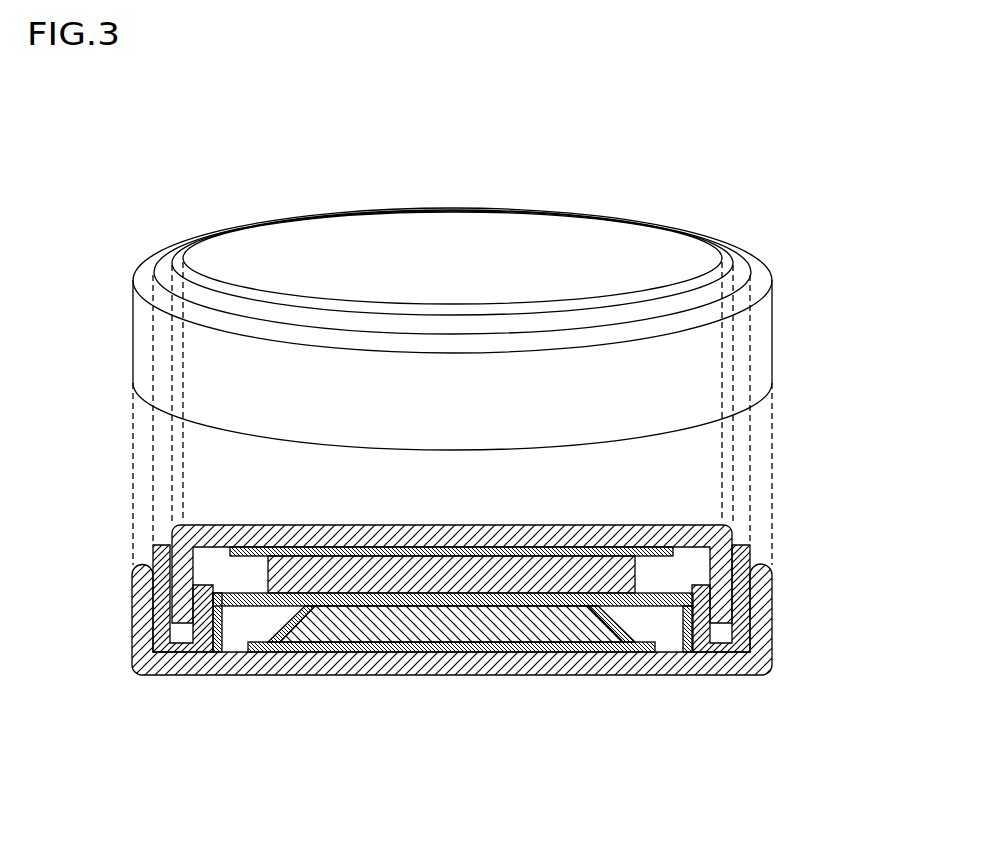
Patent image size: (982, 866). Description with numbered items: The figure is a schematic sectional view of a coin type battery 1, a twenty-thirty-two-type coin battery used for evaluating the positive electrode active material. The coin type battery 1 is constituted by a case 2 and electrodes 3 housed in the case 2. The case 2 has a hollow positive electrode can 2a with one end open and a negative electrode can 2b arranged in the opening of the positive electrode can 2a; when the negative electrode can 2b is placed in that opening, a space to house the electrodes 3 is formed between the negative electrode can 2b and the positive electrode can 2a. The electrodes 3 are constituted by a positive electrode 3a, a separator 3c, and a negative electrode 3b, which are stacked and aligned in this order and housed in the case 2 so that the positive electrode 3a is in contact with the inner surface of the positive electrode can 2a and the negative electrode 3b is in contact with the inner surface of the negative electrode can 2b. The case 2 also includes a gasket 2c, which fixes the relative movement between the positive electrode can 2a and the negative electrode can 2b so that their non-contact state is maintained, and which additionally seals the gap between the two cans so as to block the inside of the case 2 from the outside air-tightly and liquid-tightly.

The coin type battery 1 is at (472, 179).
The case 2 is at (862, 508).
The positive electrode can 2a is at (760, 343).
The negative electrode can 2b is at (612, 238).
The gasket 2c is at (163, 266).
The electrodes 3 is at (700, 793).
The positive electrode 3a is at (508, 632).
The negative electrode 3b is at (641, 592).
The separator 3c is at (562, 603).